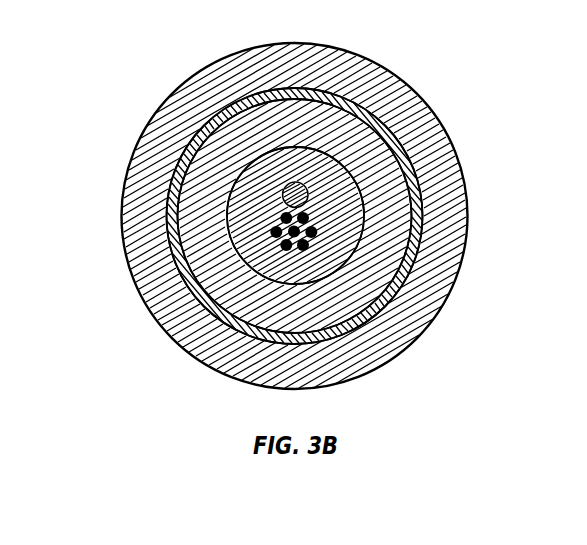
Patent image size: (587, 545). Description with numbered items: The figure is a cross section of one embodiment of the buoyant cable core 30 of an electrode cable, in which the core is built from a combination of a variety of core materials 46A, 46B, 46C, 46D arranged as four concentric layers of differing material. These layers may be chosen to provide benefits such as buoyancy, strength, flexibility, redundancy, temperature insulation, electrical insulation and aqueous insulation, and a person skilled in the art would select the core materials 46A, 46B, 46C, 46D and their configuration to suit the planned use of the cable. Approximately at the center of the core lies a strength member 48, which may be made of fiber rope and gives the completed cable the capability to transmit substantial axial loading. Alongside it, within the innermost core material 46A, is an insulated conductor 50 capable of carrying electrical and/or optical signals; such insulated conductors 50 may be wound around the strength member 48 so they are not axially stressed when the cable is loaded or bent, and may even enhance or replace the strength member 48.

The cable core 30 is at (426, 46).
The core material 46A is at (340, 215).
The core material 46B is at (360, 253).
The core material 46C is at (172, 267).
The core material 46D is at (172, 313).
The strength member 48 is at (268, 225).
The insulated conductor 50 is at (288, 174).